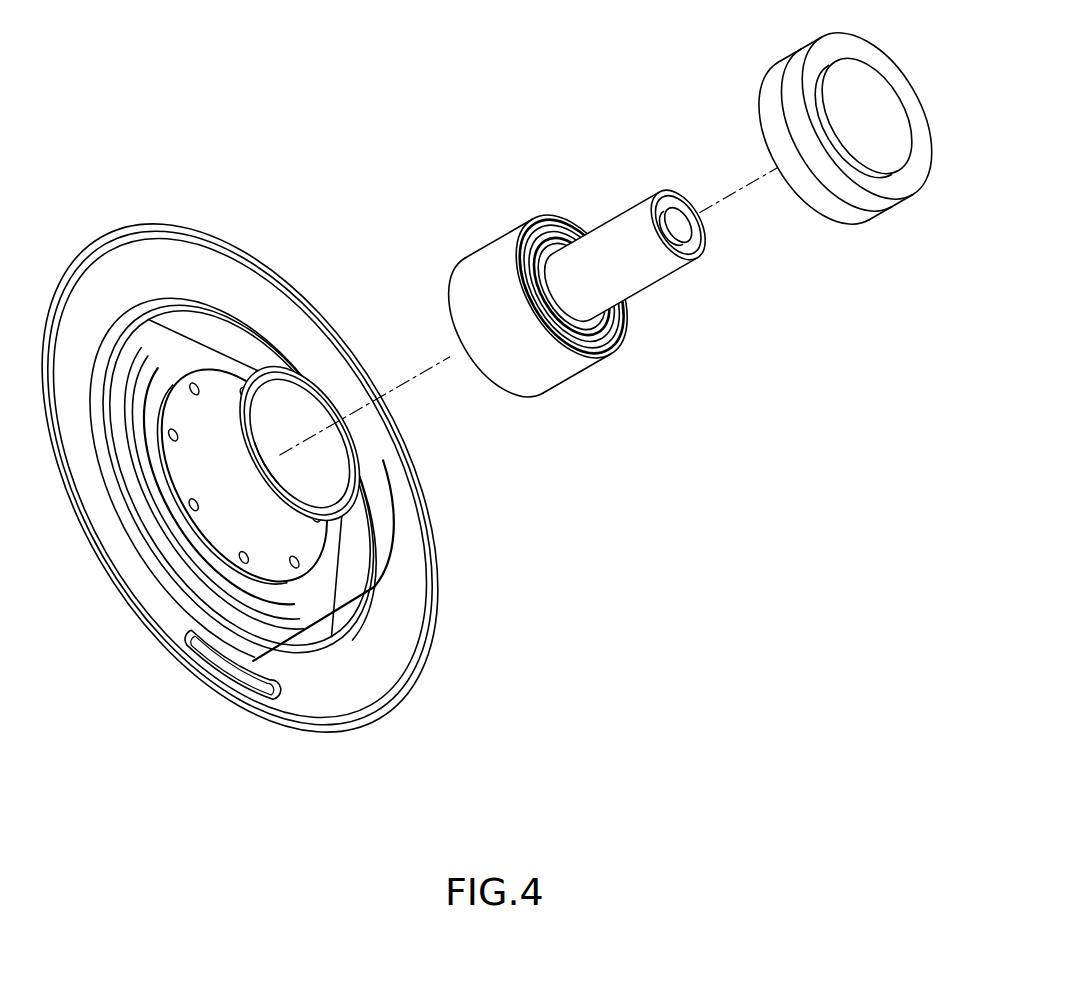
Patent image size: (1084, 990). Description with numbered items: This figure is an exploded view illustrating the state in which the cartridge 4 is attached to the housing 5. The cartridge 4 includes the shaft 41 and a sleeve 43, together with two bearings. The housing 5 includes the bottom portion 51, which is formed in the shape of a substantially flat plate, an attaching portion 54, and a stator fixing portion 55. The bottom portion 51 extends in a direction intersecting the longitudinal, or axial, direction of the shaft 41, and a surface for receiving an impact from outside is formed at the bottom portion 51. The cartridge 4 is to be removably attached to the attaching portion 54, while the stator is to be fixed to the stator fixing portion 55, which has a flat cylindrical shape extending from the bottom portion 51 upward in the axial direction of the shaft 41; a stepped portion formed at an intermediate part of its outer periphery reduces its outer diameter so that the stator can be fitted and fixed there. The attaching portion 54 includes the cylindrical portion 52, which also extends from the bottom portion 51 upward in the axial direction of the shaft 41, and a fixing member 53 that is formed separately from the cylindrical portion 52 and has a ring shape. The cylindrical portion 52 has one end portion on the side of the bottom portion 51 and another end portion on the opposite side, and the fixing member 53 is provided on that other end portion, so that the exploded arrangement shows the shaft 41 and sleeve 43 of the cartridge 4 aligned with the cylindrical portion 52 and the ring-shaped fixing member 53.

The cartridge 4 is at (551, 267).
The shaft 41 is at (628, 228).
The sleeve 43 is at (482, 298).
The housing 5 is at (479, 405).
The bottom portion 51 is at (337, 570).
The cylindrical portion 52 is at (348, 509).
The fixing member 53 is at (839, 208).
The attaching portion 54 is at (554, 324).
The stator fixing portion 55 is at (377, 593).